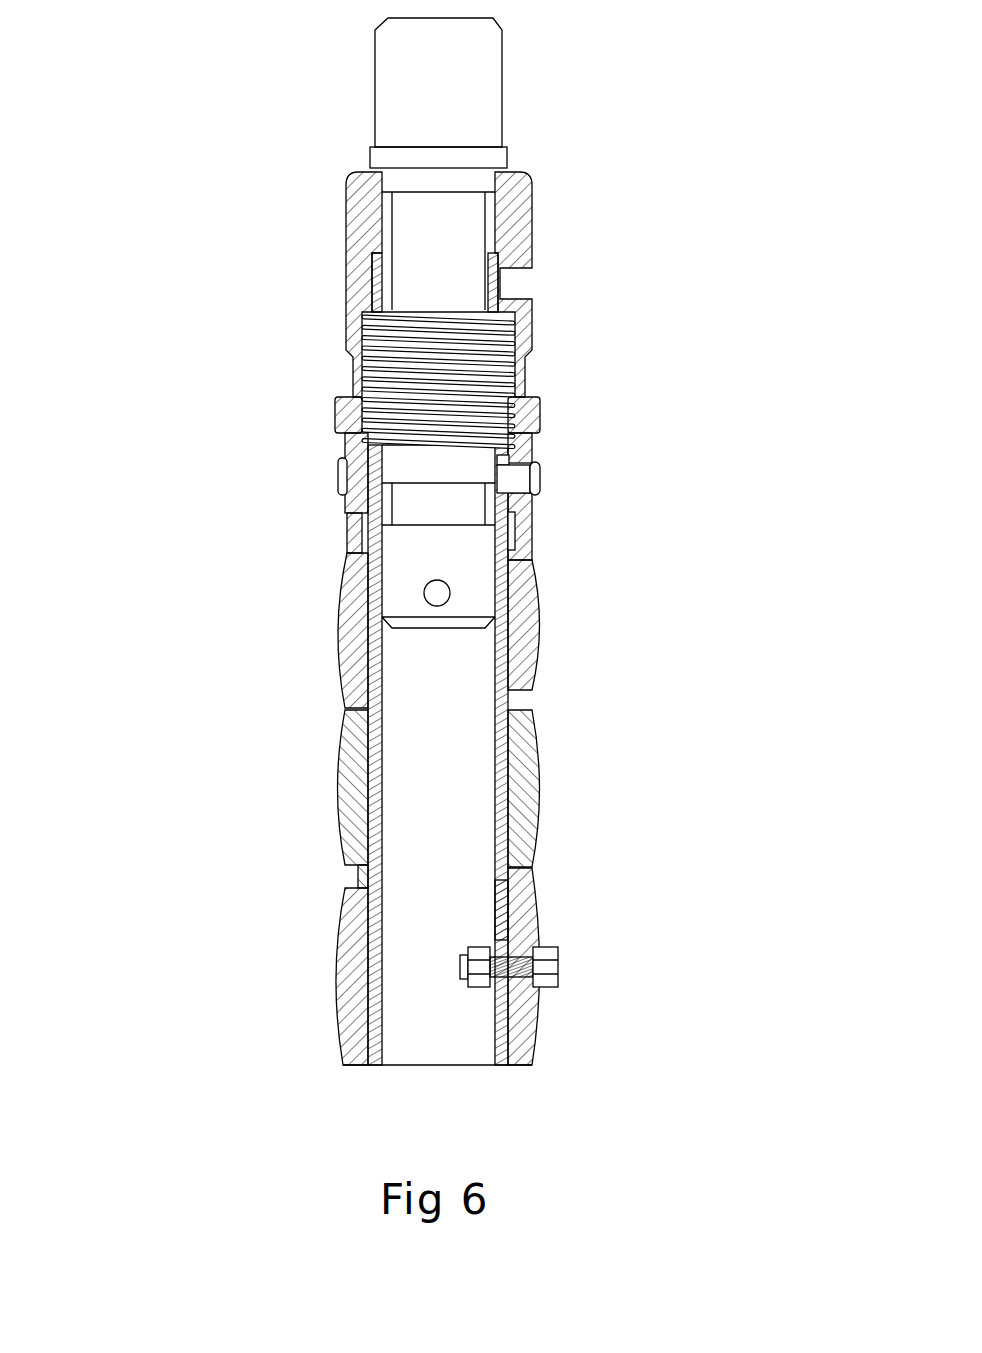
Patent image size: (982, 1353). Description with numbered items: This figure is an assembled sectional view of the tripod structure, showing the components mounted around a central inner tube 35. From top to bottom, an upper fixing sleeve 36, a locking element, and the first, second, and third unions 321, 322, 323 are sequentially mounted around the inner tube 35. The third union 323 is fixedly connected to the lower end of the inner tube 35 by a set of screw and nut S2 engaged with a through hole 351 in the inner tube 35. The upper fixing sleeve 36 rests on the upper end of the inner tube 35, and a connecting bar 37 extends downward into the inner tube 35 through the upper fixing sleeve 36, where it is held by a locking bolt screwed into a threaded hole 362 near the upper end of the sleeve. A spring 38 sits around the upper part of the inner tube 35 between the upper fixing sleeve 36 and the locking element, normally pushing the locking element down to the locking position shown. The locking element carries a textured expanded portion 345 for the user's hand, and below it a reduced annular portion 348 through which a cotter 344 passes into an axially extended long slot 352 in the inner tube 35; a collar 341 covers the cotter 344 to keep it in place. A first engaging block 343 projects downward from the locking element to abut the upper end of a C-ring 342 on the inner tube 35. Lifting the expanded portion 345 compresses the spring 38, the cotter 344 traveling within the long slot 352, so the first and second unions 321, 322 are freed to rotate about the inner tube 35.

The connecting bar 37 is at (460, 140).
The upper fixing sleeve 36 is at (518, 217).
The spring 38 is at (353, 362).
The expanded portion 345 is at (327, 412).
The reduced annular portion 348 is at (340, 468).
The long slot 352 is at (503, 463).
The cotter 344 is at (517, 487).
The collar 341 is at (533, 487).
The first engaging block 343 is at (515, 510).
The C-ring 342 is at (520, 528).
The first union 321 is at (323, 625).
The second union 322 is at (325, 795).
The third union 323 is at (325, 968).
The threaded hole 362 is at (440, 602).
The inner tube 35 is at (498, 795).
The through hole 351 is at (497, 908).
The screw and nut S2 is at (533, 962).